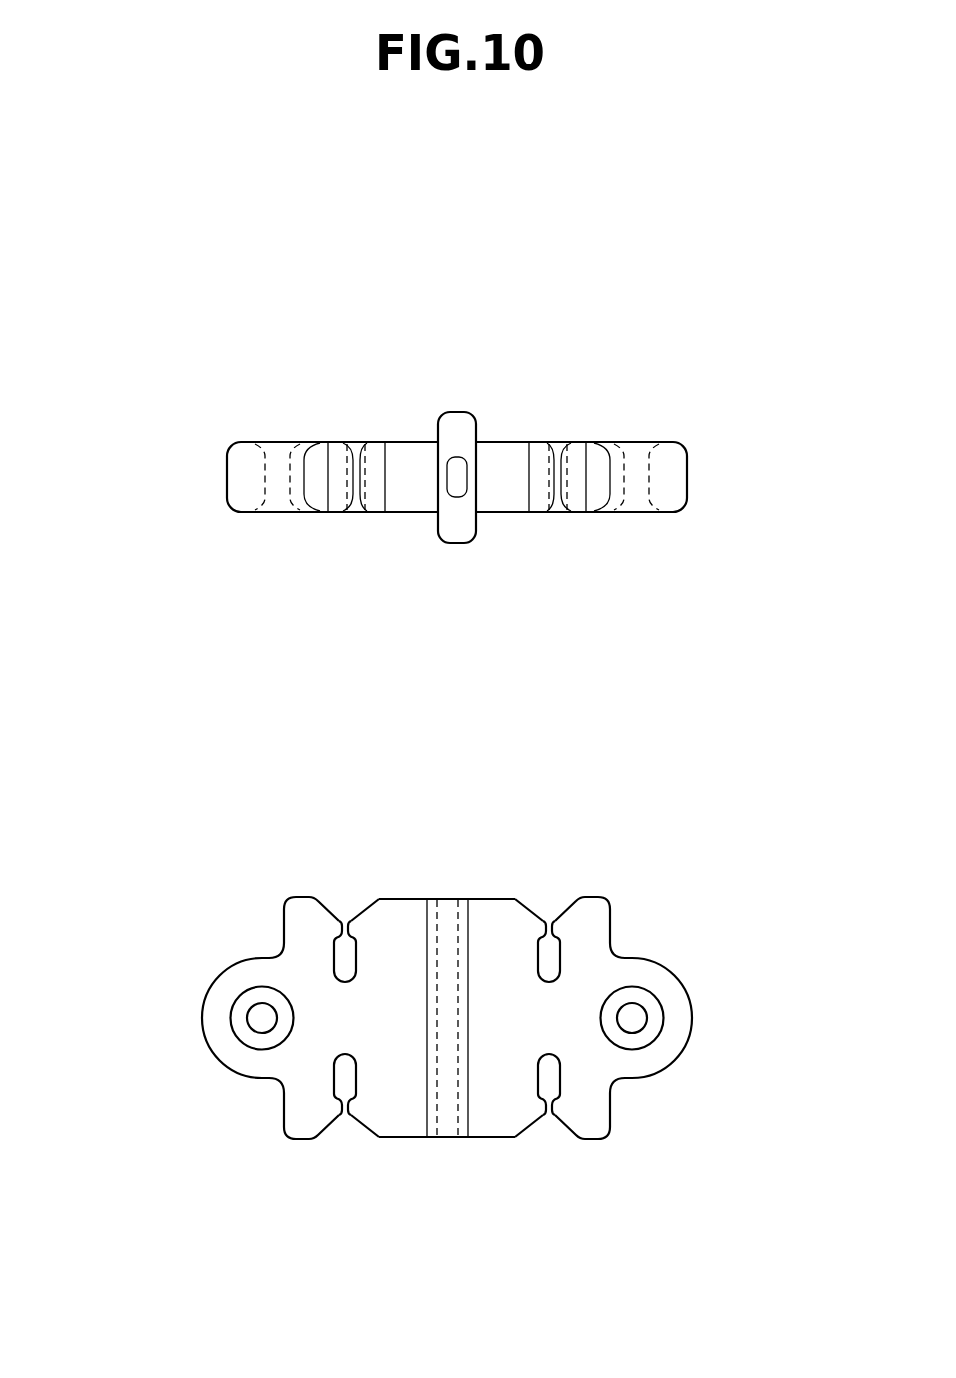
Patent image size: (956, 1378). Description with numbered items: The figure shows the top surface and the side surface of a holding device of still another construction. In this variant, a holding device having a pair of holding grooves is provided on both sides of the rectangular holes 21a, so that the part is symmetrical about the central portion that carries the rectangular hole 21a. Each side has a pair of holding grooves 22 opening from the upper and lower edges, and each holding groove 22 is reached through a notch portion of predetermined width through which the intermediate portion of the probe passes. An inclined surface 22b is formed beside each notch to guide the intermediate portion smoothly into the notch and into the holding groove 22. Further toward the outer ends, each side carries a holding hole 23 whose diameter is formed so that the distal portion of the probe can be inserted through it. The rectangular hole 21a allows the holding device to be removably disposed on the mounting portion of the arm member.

The rectangular hole 21a is at (450, 481).
The holding groove 22 is at (356, 953).
The inclined surface 22b is at (362, 911).
The holding hole 23 is at (252, 1014).